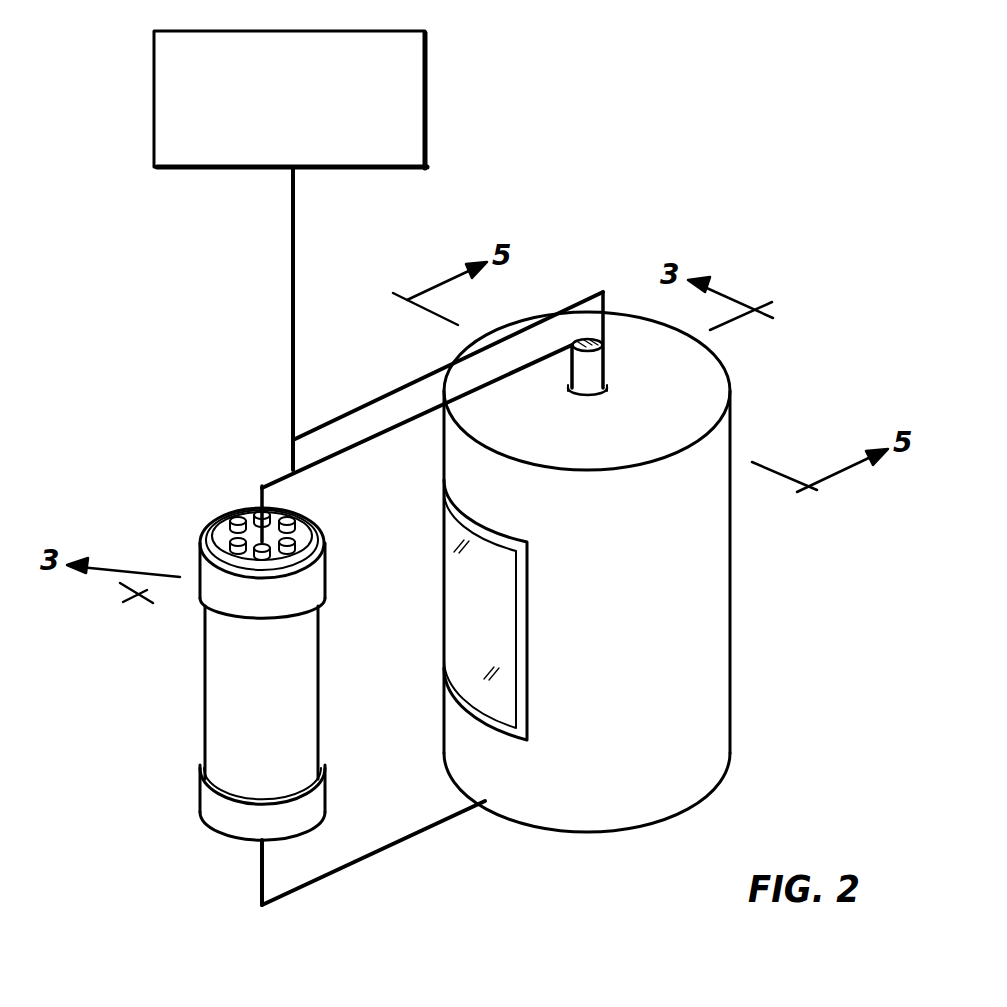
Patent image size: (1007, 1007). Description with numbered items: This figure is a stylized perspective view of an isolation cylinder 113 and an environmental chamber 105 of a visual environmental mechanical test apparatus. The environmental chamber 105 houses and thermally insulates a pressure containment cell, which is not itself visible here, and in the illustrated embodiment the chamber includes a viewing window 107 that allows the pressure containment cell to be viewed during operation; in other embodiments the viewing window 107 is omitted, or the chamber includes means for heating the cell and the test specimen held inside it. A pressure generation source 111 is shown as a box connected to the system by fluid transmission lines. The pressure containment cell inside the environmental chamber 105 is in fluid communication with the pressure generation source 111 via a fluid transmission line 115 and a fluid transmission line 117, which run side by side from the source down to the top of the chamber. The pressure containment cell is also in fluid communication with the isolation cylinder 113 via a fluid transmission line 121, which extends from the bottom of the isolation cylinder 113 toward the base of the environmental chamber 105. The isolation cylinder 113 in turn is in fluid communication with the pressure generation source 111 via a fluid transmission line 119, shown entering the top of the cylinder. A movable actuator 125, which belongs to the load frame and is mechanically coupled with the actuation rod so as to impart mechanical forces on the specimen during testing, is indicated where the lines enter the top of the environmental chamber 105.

The environmental chamber 105 is at (733, 716).
The viewing window 107 is at (477, 600).
The pressure generation source 111 is at (417, 86).
The isolation cylinder 113 is at (213, 693).
The fluid transmission line 115 is at (428, 370).
The fluid transmission line 117 is at (317, 463).
The fluid transmission line 119 is at (250, 495).
The fluid transmission line 121 is at (320, 882).
The movable actuator 125 is at (590, 388).